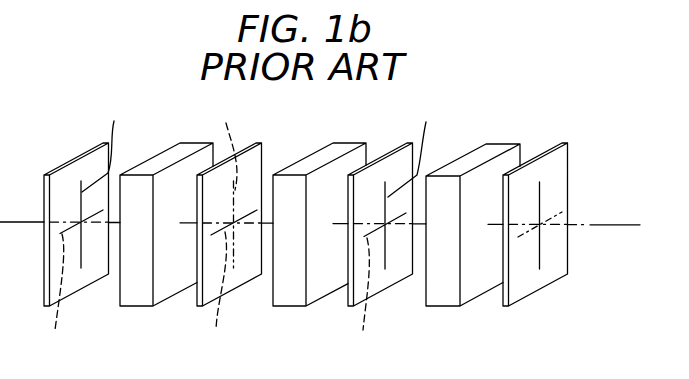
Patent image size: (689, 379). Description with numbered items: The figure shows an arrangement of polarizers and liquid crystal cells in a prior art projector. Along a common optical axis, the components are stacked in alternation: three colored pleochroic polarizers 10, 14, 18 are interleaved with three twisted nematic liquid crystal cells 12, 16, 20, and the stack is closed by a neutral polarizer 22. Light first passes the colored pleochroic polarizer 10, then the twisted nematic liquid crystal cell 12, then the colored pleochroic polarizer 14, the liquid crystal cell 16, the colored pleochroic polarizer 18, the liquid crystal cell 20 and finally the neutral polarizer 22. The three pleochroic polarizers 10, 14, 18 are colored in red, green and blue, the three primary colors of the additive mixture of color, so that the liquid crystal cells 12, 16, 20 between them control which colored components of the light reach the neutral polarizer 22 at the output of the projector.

The colored pleochroic polarizer 10 is at (78, 158).
The twisted nematic liquid crystal cell 12 is at (163, 152).
The colored pleochroic polarizer 14 is at (199, 308).
The twisted nematic liquid crystal cell 16 is at (289, 308).
The colored pleochroic polarizer 18 is at (393, 152).
The twisted nematic liquid crystal cell 20 is at (442, 308).
The neutral polarizer 22 is at (505, 308).